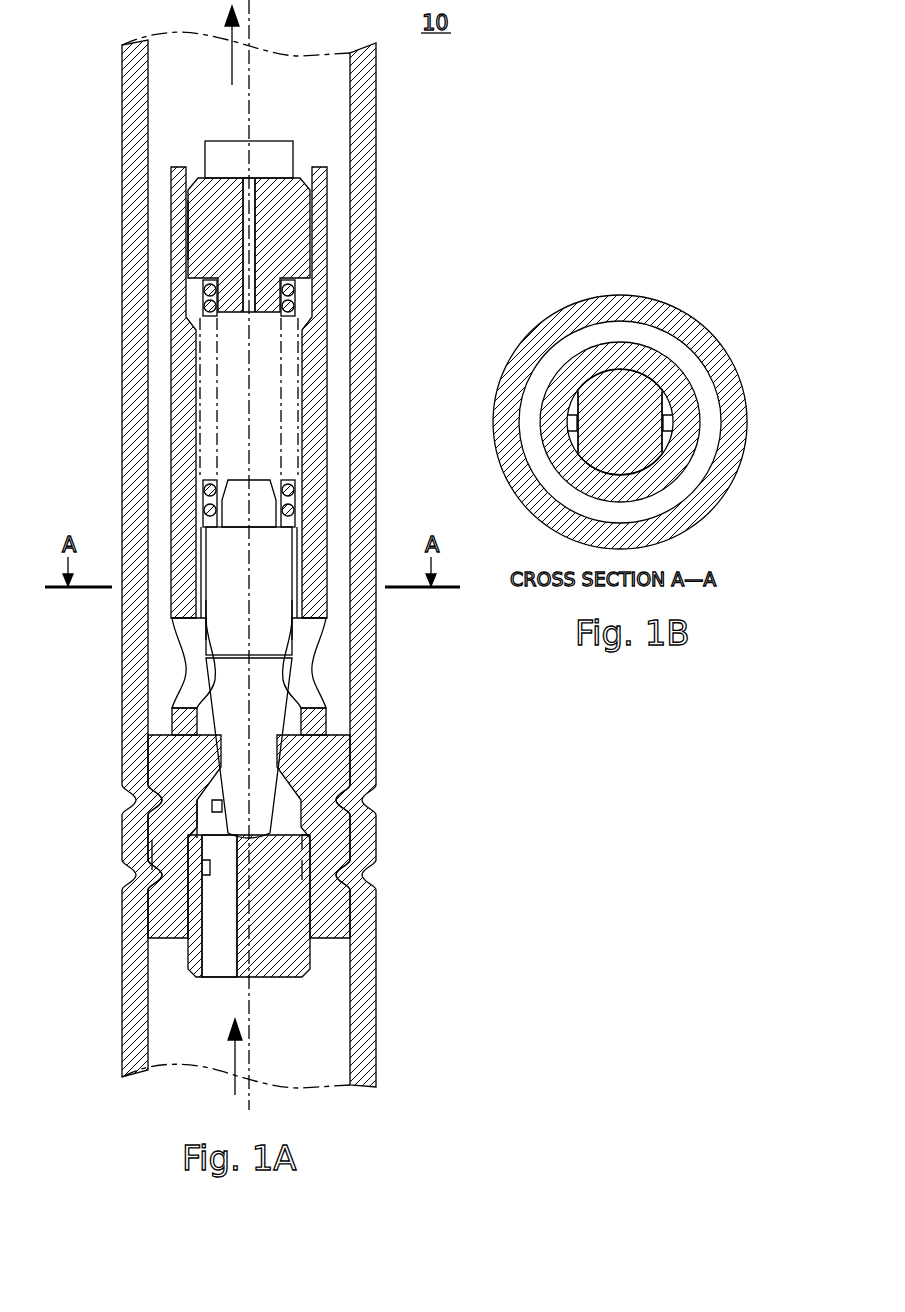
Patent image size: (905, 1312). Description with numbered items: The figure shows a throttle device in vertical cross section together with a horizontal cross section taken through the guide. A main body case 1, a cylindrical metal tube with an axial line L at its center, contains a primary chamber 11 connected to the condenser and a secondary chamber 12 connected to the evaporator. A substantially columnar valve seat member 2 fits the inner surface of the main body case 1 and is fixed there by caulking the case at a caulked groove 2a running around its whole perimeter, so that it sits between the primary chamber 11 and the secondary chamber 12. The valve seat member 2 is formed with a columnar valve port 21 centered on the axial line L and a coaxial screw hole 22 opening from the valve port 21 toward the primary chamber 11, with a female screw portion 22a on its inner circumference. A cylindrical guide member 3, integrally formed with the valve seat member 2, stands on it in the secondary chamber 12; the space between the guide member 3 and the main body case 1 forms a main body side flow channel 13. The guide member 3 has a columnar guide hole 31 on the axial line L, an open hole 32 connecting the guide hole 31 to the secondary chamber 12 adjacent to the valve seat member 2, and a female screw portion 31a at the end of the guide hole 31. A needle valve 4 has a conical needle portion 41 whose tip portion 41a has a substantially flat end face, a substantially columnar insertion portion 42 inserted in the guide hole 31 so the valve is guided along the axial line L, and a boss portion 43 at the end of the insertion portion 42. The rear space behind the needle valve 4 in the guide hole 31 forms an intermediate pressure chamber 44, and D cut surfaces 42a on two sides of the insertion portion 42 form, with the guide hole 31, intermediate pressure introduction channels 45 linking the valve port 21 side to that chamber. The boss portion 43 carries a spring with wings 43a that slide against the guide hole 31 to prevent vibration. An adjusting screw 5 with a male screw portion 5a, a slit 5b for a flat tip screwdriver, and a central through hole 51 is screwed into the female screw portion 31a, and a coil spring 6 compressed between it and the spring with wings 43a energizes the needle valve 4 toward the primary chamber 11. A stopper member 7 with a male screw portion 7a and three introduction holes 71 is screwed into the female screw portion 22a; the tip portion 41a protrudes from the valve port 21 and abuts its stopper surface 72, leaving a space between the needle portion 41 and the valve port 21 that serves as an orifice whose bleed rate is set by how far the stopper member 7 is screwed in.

In FIG. 1A, the main body case 1 is at (384, 272).
In FIG. 1B, the main body case 1 is at (740, 353).
In FIG. 1A, the valve seat member 2 is at (358, 850).
In FIG. 1A, the caulked groove 2a is at (140, 797).
In FIG. 1A, the guide member 3 is at (336, 370).
In FIG. 1B, the guide member 3 is at (689, 365).
In FIG. 1A, the needle valve 4 is at (298, 672).
In FIG. 1B, the needle valve 4 is at (653, 368).
In FIG. 1A, the adjusting screw 5 is at (313, 228).
In FIG. 1A, the male screw portion 5a is at (188, 258).
In FIG. 1A, the slit 5b is at (205, 155).
In FIG. 1A, the coil spring 6 is at (294, 310).
In FIG. 1A, the stopper member 7 is at (275, 905).
In FIG. 1A, the male screw portion 7a is at (200, 927).
In FIG. 1A, the primary chamber 11 is at (177, 1002).
In FIG. 1A, the secondary chamber 12 is at (174, 108).
In FIG. 1A, the main body side flow channel 13 is at (158, 362).
In FIG. 1B, the main body side flow channel 13 is at (528, 417).
In FIG. 1A, the valve port 21 is at (295, 757).
In FIG. 1A, the screw hole 22 is at (366, 800).
In FIG. 1A, the female screw portion 22a is at (187, 857).
In FIG. 1A, the guide hole 31 is at (283, 607).
In FIG. 1B, the guide hole 31 is at (677, 490).
In FIG. 1A, the female screw portion 31a is at (207, 232).
In FIG. 1A, the open hole 32 is at (190, 706).
In FIG. 1A, the needle portion 41 is at (217, 755).
In FIG. 1A, the tip portion 41a is at (220, 813).
In FIG. 1A, the insertion portion 42 is at (215, 640).
In FIG. 1B, the insertion portion 42 is at (562, 363).
In FIG. 1A, the D cut surface 42a is at (202, 600).
In FIG. 1B, the D cut surface 42a is at (575, 397).
In FIG. 1A, the boss portion 43 is at (230, 500).
In FIG. 1A, the spring with wings 43a is at (303, 517).
In FIG. 1A, the intermediate pressure chamber 44 is at (233, 418).
In FIG. 1A, the intermediate pressure introduction channel 45 is at (202, 543).
In FIG. 1B, the intermediate pressure introduction channel 45 is at (570, 423).
In FIG. 1A, the through hole 51 is at (250, 217).
In FIG. 1A, the introduction hole 71 is at (195, 887).
In FIG. 1A, the stopper surface 72 is at (313, 825).
In FIG. 1A, the axial line L is at (249, 97).